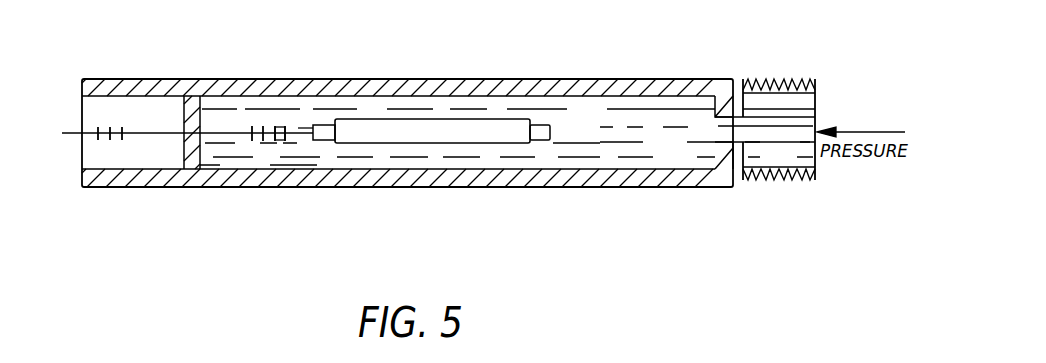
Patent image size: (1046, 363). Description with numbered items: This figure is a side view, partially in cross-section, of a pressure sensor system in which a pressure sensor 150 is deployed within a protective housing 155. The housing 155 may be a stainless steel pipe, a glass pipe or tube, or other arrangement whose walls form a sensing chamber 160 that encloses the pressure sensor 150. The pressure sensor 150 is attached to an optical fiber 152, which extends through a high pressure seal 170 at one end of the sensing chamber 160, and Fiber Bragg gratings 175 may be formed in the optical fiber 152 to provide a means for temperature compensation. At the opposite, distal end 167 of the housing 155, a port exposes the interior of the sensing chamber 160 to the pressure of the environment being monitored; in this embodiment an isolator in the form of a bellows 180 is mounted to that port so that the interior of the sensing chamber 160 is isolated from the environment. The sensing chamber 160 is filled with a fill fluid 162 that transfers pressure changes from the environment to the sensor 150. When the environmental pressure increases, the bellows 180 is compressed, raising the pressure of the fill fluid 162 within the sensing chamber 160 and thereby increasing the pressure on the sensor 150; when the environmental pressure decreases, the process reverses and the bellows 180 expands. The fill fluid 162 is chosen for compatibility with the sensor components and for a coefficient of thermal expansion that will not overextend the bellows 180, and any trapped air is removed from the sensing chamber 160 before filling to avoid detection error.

The pressure sensor 150 is at (433, 119).
The optical fiber 152 is at (298, 128).
The protective housing 155 is at (357, 187).
The sensing chamber 160 is at (583, 143).
The fill fluid 162 is at (665, 127).
The distal end 167 is at (737, 81).
The high pressure seal 170 is at (200, 133).
The Fiber Bragg gratings 175 is at (267, 155).
The bellows 180 is at (815, 107).